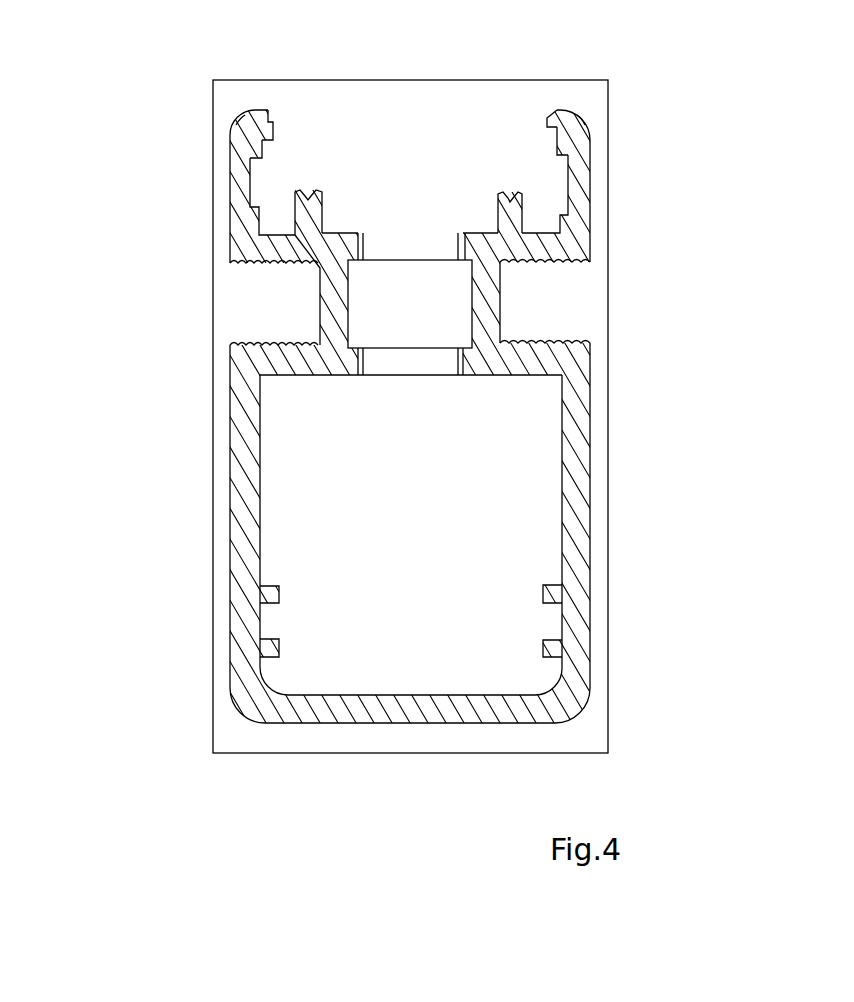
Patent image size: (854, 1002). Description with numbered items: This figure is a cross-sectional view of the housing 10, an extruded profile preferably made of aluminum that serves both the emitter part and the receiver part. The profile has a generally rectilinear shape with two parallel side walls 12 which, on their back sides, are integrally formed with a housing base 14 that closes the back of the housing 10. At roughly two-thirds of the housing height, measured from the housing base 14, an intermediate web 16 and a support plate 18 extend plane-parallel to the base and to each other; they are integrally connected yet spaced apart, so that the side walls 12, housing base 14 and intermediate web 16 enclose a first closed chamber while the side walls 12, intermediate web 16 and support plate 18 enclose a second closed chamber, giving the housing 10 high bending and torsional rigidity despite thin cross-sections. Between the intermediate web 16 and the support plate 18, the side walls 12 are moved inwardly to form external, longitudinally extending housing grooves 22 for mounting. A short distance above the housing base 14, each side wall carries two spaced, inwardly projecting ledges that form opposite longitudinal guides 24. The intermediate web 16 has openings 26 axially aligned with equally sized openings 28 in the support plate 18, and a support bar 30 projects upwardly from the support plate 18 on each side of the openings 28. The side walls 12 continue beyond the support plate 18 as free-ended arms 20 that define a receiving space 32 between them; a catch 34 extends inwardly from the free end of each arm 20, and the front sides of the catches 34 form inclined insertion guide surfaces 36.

The housing 10 is at (205, 515).
The side walls 12 is at (247, 453).
The housing base 14 is at (433, 700).
The intermediate web 16 is at (350, 365).
The support plate 18 is at (337, 240).
The free-ended arms 20 is at (242, 176).
The housing grooves 22 is at (307, 312).
The guides 24 is at (267, 628).
The openings 26 is at (423, 363).
The openings 28 is at (418, 247).
The support bar 30 is at (307, 207).
The receiving space 32 is at (556, 140).
The catch 34 is at (282, 130).
The inclined insertion guide surfaces 36 is at (266, 122).